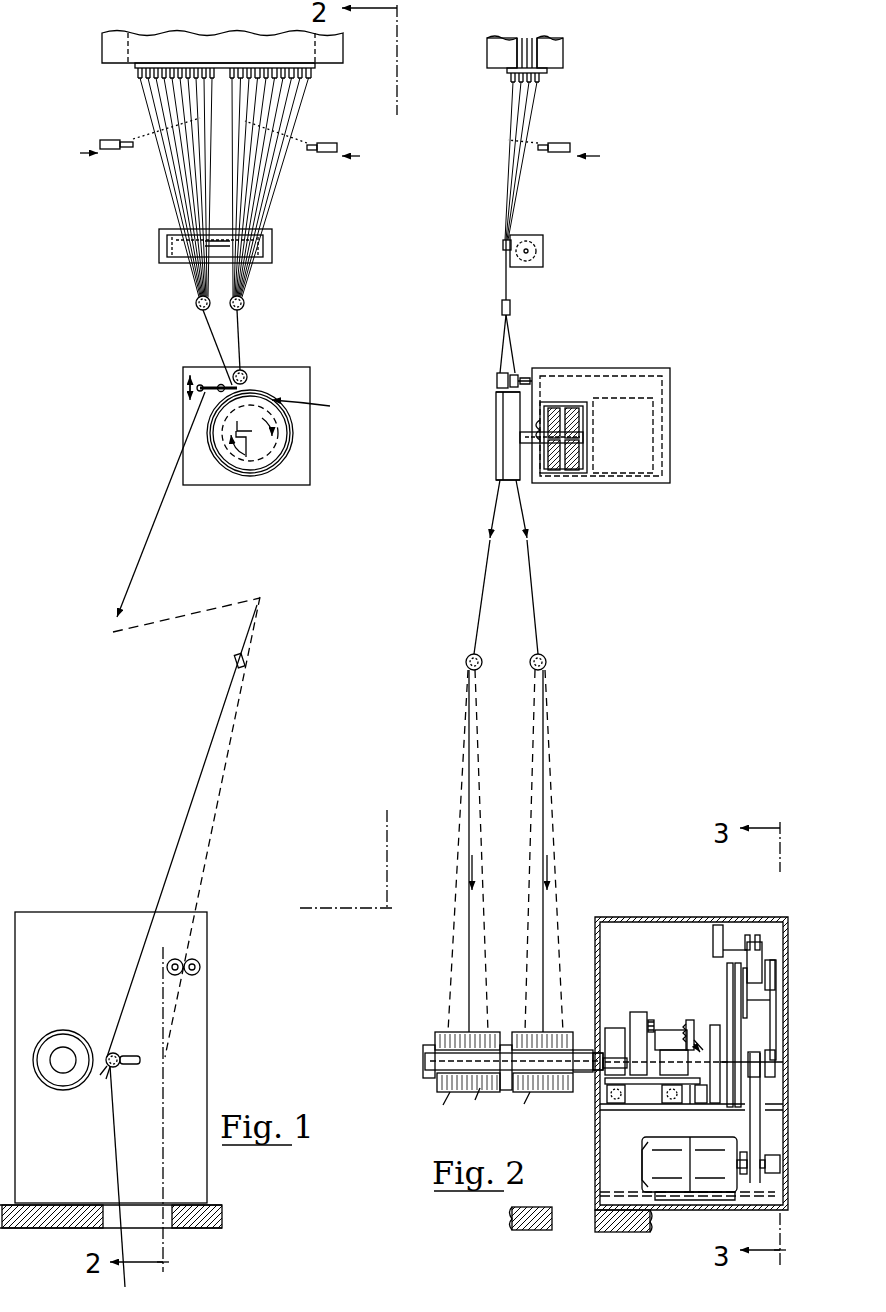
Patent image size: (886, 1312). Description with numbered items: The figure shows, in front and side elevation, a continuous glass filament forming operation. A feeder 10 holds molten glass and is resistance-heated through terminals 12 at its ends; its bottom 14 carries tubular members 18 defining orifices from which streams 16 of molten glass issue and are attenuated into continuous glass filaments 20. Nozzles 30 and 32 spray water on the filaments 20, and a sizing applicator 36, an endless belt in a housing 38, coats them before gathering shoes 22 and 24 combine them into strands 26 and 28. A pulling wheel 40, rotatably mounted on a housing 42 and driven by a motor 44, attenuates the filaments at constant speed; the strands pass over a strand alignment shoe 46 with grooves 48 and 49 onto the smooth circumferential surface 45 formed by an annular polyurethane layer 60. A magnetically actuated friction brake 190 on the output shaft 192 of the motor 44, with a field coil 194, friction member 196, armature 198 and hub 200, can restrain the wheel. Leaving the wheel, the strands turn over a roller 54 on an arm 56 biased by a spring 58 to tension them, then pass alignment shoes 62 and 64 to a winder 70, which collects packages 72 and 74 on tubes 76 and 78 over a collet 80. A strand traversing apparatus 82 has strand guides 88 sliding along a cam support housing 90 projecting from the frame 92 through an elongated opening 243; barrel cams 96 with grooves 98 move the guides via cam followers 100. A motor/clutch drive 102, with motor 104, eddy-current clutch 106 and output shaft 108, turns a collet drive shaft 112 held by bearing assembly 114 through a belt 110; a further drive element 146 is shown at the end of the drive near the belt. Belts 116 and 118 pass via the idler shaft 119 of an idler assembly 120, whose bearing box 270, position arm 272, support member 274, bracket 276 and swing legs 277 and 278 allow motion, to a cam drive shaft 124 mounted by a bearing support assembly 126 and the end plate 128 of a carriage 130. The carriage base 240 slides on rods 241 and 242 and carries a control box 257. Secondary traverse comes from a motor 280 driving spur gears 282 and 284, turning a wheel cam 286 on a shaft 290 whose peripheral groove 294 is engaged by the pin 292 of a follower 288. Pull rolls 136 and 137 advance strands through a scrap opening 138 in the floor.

In FIG. 1, the feeder 10 is at (124, 24).
In FIG. 2, the feeder 10 is at (568, 40).
In FIG. 1, the terminals 12 is at (128, 45).
In FIG. 2, the terminals 12 is at (492, 46).
In FIG. 1, the bottom 14 is at (136, 67).
In FIG. 2, the bottom 14 is at (507, 70).
In FIG. 1, the streams of molten glass 16 is at (158, 80).
In FIG. 2, the streams of molten glass 16 is at (515, 82).
In FIG. 1, the tubular members 18 is at (140, 74).
In FIG. 2, the tubular members 18 is at (511, 76).
In FIG. 1, the continuous glass filaments 20 is at (192, 168).
In FIG. 2, the continuous glass filaments 20 is at (535, 118).
In FIG. 1, the gathering shoe 22 is at (198, 298).
In FIG. 1, the gathering shoe 24 is at (242, 297).
In FIG. 2, the gathering shoe 24 is at (512, 300).
In FIG. 1, the strand 26 is at (200, 322).
In FIG. 2, the strand 26 is at (500, 330).
In FIG. 1, the strand 28 is at (240, 318).
In FIG. 2, the strand 28 is at (513, 330).
In FIG. 1, the nozzle 30 is at (100, 141).
In FIG. 1, the nozzle 32 is at (330, 143).
In FIG. 2, the nozzle 32 is at (550, 142).
In FIG. 1, the sizing applicator 36 is at (250, 236).
In FIG. 2, the sizing applicator 36 is at (525, 238).
In FIG. 1, the housing 38 is at (272, 248).
In FIG. 2, the housing 38 is at (544, 243).
In FIG. 1, the pulling wheel 40 is at (293, 458).
In FIG. 2, the pulling wheel 40 is at (494, 423).
In FIG. 1, the housing 42 is at (298, 367).
In FIG. 2, the housing 42 is at (670, 368).
In FIG. 1, the motor 44 is at (230, 455).
In FIG. 2, the motor 44 is at (653, 398).
In FIG. 2, the circumferential surface 45 is at (505, 403).
In FIG. 1, the strand alignment shoe 46 is at (262, 345).
In FIG. 2, the strand alignment shoe 46 is at (497, 382).
In FIG. 2, the circumferential groove 48 is at (508, 370).
In FIG. 2, the circumferential groove 49 is at (517, 374).
In FIG. 1, the roller 54 is at (202, 386).
In FIG. 1, the arm 56 is at (216, 383).
In FIG. 1, the spring 58 is at (198, 390).
In FIG. 1, the annular layer 60 is at (313, 410).
In FIG. 2, the annular layer 60 is at (497, 446).
In FIG. 1, the strand alignment shoe 62 is at (246, 656).
In FIG. 2, the strand alignment shoe 62 is at (480, 654).
In FIG. 2, the strand alignment shoe 64 is at (532, 665).
In FIG. 1, the winder 70 is at (62, 911).
In FIG. 2, the winder 70 is at (630, 912).
In FIG. 1, the wound package 72 is at (96, 1018).
In FIG. 2, the wound package 72 is at (486, 1022).
In FIG. 2, the wound package 74 is at (555, 1032).
In FIG. 1, the tube 76 is at (65, 1034).
In FIG. 2, the tube 76 is at (438, 1032).
In FIG. 2, the tube 78 is at (505, 1033).
In FIG. 1, the collet 80 is at (60, 1035).
In FIG. 2, the collet 80 is at (425, 1043).
In FIG. 1, the strand traversing apparatus 82 is at (118, 1052).
In FIG. 2, the strand traversing apparatus 82 is at (428, 1072).
In FIG. 1, the strand guides 88 is at (106, 1068).
In FIG. 1, the cam support housing 90 is at (110, 1068).
In FIG. 2, the cam support housing 90 is at (425, 1058).
In FIG. 1, the frame 92 is at (102, 1153).
In FIG. 2, the frame 92 is at (598, 925).
In FIG. 1, the barrel cams 96 is at (118, 1068).
In FIG. 2, the barrel cams 96 is at (450, 1092).
In FIG. 2, the guide grooves 98 is at (480, 1090).
In FIG. 1, the cam followers 100 is at (118, 1052).
In FIG. 2, the motor/clutch drive 102 is at (618, 1167).
In FIG. 2, the electric motor 104 is at (674, 1174).
In FIG. 2, the eddy-current clutch 106 is at (715, 1174).
In FIG. 2, the output shaft 108 is at (745, 1160).
In FIG. 2, the belt 110 is at (755, 1095).
In FIG. 2, the collet drive shaft 112 is at (775, 1058).
In FIG. 2, the bearing mounting assembly 114 is at (632, 1012).
In FIG. 2, the belt 116 is at (745, 1006).
In FIG. 2, the belt 118 is at (745, 1014).
In FIG. 2, the idler shaft 119 is at (750, 978).
In FIG. 2, the idler assembly 120 is at (757, 940).
In FIG. 2, the cam drive shaft 124 is at (663, 1030).
In FIG. 2, the bearing support assembly 126 is at (645, 1038).
In FIG. 2, the vertical end plate 128 is at (718, 1047).
In FIG. 2, the carriage 130 is at (728, 1080).
In FIG. 1, the pull roll 136 is at (180, 958).
In FIG. 1, the pull roll 137 is at (196, 958).
In FIG. 1, the scrap opening 138 is at (148, 1218).
In FIG. 2, the scrap opening 138 is at (585, 1215).
In FIG. 2, the output shaft 146 is at (775, 1162).
In FIG. 2, the friction brake 190 is at (572, 473).
In FIG. 2, the output shaft 192 is at (583, 438).
In FIG. 2, the field coil 194 is at (580, 410).
In FIG. 2, the friction member 196 is at (568, 408).
In FIG. 2, the armature 198 is at (552, 408).
In FIG. 2, the hub 200 is at (545, 394).
In FIG. 2, the base 240 is at (705, 1104).
In FIG. 2, the support rod 241 is at (598, 1073).
In FIG. 2, the support rod 242 is at (655, 1118).
In FIG. 1, the elongated opening 243 is at (140, 1060).
In FIG. 2, the control box 257 is at (605, 1102).
In FIG. 2, the bearing box 270 is at (772, 970).
In FIG. 2, the position arm 272 is at (738, 992).
In FIG. 2, the support member 274 is at (777, 965).
In FIG. 2, the support bracket 276 is at (715, 930).
In FIG. 2, the swing leg 277 is at (753, 940).
In FIG. 2, the swing leg 278 is at (750, 935).
In FIG. 2, the motor 280 is at (620, 1033).
In FIG. 2, the spur gear 282 is at (612, 1028).
In FIG. 2, the spur gear 284 is at (667, 1076).
In FIG. 2, the wheel cam 286 is at (690, 1020).
In FIG. 2, the follower 288 is at (698, 1104).
In FIG. 2, the shaft 290 is at (690, 1026).
In FIG. 2, the pin 292 is at (656, 1022).
In FIG. 2, the peripheral groove 294 is at (695, 1040).